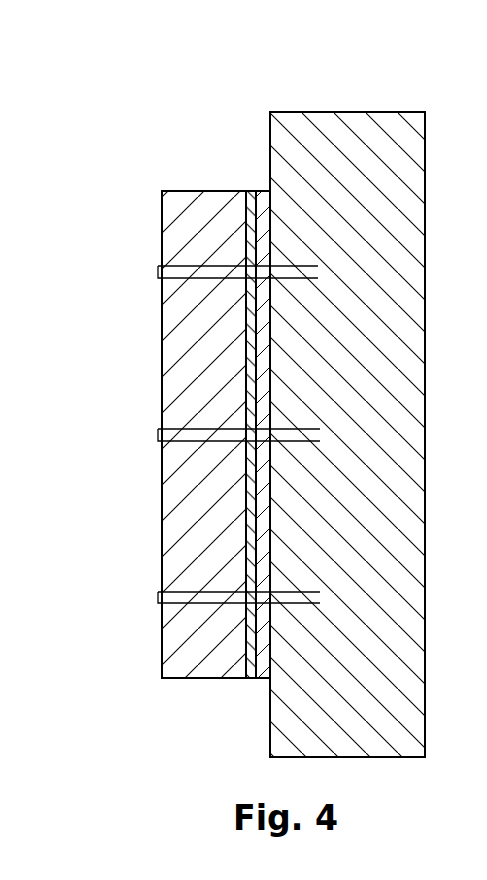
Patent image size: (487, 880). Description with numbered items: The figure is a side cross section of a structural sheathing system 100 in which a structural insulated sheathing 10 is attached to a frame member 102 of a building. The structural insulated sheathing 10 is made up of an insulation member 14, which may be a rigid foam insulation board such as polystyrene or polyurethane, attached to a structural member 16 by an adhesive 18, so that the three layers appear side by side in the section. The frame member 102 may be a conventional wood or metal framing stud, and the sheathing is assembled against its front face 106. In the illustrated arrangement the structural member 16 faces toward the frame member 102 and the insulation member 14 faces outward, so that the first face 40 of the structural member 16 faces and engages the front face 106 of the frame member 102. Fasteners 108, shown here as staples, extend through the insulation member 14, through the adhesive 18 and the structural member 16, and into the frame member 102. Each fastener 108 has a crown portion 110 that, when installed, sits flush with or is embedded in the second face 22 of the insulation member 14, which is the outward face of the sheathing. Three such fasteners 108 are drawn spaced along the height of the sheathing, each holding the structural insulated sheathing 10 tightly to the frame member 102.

The structural sheathing system 100 is at (432, 78).
The frame members 102 is at (385, 205).
The front face 106 is at (270, 148).
The structural insulated sheathing 10 is at (142, 160).
The insulation member 14 is at (183, 668).
The structural member 16 is at (265, 678).
The adhesive 18 is at (252, 678).
The second face 22 is at (162, 292).
The first face 40 is at (272, 378).
The fasteners 108 is at (195, 265).
The crown portion 110 is at (160, 272).